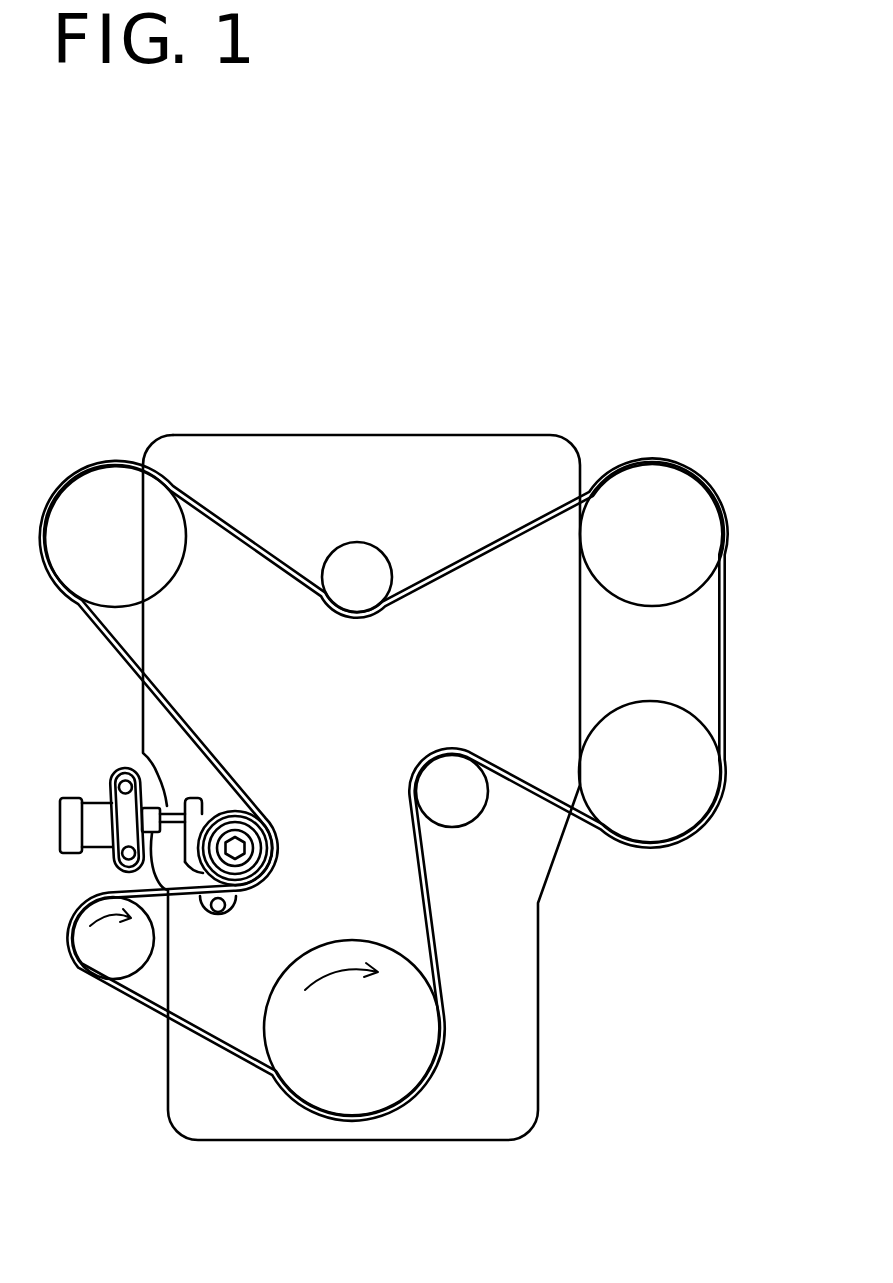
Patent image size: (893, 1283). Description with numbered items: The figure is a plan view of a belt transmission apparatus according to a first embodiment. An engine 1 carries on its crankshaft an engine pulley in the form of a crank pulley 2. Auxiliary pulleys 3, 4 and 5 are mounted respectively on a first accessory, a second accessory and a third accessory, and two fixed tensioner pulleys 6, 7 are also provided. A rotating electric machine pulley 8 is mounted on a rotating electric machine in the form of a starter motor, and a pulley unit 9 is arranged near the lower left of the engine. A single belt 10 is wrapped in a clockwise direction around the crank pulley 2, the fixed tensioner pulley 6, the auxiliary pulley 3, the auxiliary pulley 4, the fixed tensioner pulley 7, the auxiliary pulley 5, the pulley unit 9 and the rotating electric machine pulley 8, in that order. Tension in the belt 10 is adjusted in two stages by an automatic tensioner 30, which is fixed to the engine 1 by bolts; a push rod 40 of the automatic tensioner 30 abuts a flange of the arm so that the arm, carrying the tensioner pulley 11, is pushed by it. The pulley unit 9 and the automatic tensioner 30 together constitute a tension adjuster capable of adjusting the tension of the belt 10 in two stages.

The engine 1 is at (370, 448).
The crank pulley 2 is at (350, 1093).
The auxiliary pulley 3 is at (660, 823).
The auxiliary pulley 4 is at (697, 500).
The auxiliary pulley 5 is at (88, 485).
The fixed tensioner pulley 6 is at (455, 807).
The fixed tensioner pulley 7 is at (357, 573).
The rotating electric machine pulley 8 is at (97, 953).
The pulley unit 9 is at (248, 900).
The belt 10 is at (433, 930).
The tensioner pulley 11 is at (272, 862).
The automatic tensioner 30 is at (84, 787).
The push rod 40 is at (145, 755).